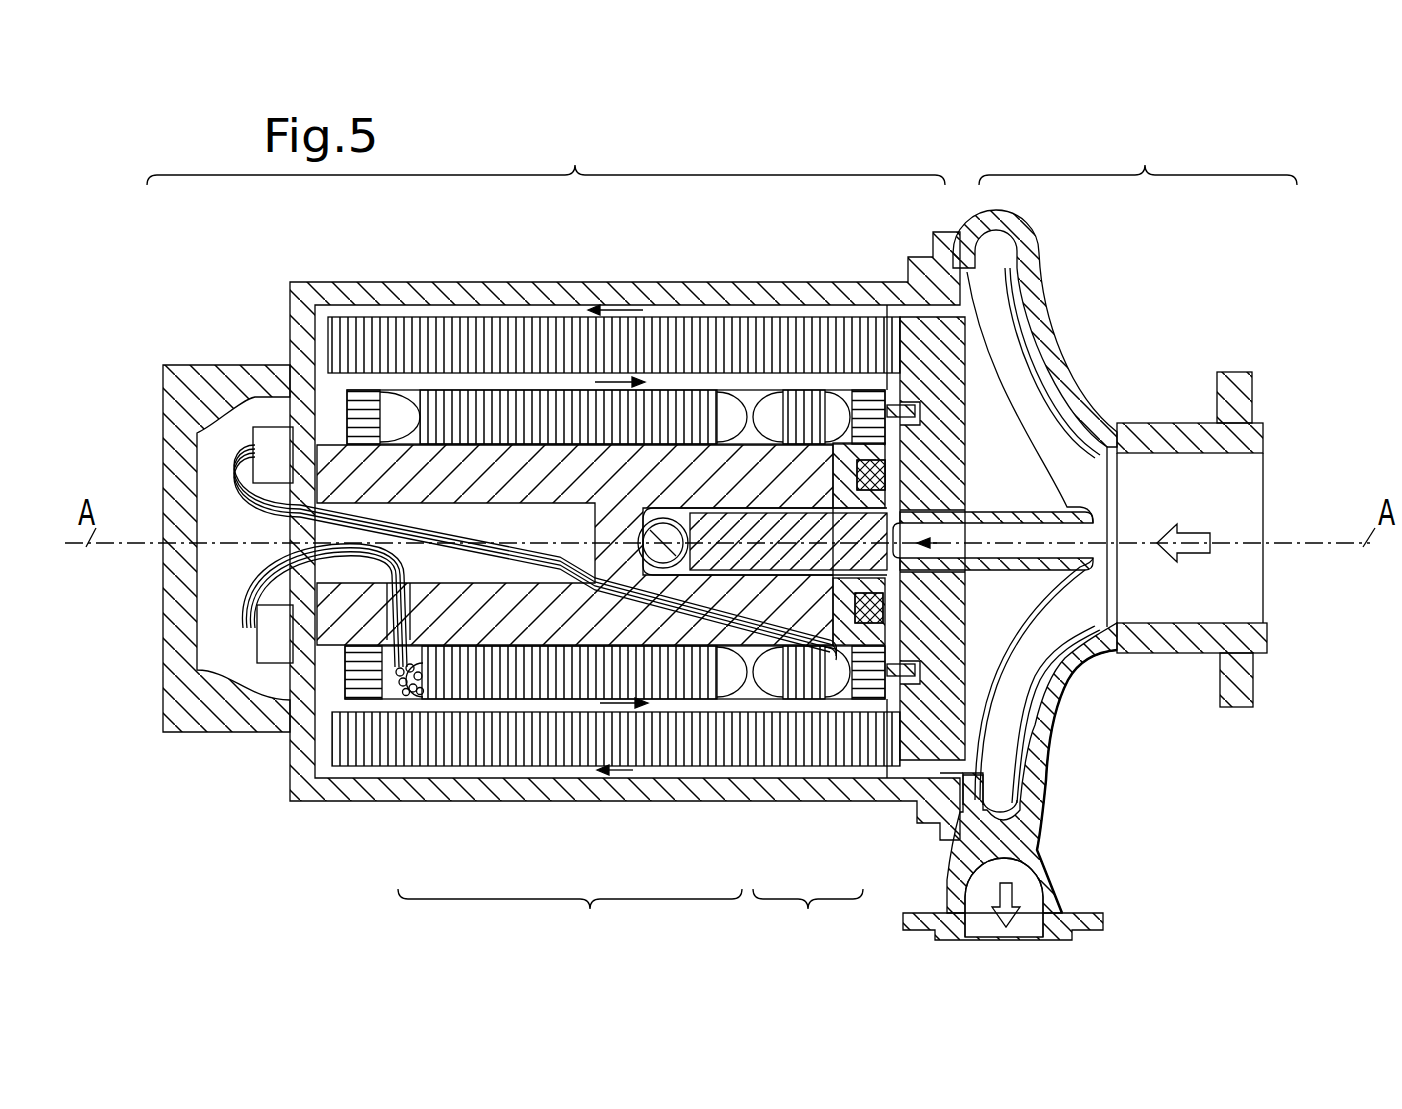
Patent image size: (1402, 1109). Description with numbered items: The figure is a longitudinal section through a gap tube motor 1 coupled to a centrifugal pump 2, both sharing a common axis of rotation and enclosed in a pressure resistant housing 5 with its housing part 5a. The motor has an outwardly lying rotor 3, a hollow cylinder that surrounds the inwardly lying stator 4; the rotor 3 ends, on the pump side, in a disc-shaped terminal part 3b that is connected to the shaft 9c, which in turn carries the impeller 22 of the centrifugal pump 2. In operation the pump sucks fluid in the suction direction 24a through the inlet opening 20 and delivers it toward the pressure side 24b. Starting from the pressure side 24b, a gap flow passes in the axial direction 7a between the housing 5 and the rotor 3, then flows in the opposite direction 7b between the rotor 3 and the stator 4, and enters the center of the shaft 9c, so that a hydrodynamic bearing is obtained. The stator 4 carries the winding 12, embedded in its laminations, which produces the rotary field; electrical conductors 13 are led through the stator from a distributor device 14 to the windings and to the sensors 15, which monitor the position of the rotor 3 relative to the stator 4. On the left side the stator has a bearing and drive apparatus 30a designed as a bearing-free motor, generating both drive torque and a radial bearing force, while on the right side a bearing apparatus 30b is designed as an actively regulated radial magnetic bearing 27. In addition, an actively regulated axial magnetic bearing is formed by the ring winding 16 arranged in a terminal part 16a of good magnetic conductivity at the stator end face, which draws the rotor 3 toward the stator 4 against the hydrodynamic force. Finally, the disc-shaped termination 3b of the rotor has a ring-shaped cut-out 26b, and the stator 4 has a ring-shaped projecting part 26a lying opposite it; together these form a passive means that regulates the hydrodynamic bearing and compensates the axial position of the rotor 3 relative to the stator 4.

The gap tube motor 1 is at (546, 154).
The centrifugal pump 2 is at (1138, 154).
The rotor 3 is at (585, 747).
The disc-shaped terminal part 3b is at (940, 368).
The stator 4 is at (527, 637).
The housing 5 is at (293, 322).
The housing part 5a is at (162, 396).
The axial gap flow direction 7a is at (625, 772).
The opposite gap flow direction 7b is at (623, 707).
The shaft 9c is at (1010, 513).
The winding 12 is at (413, 407).
The electrical conductors 13 is at (237, 587).
The distributor device 14 is at (267, 637).
The sensor 15 is at (357, 417).
The ring winding 16 is at (893, 608).
The terminal part 16a is at (913, 650).
The inlet opening 20 is at (1250, 590).
The impeller 22 is at (1030, 417).
The suction side flow direction 24a is at (1210, 533).
The pressure side 24b is at (1000, 920).
The ring-shaped projecting part 26a is at (913, 405).
The ring-shaped cut-out 26b is at (918, 413).
The radial magnetic bearing 27 is at (797, 395).
The bearing and drive apparatus 30a is at (570, 918).
The bearing apparatus 30b is at (808, 918).